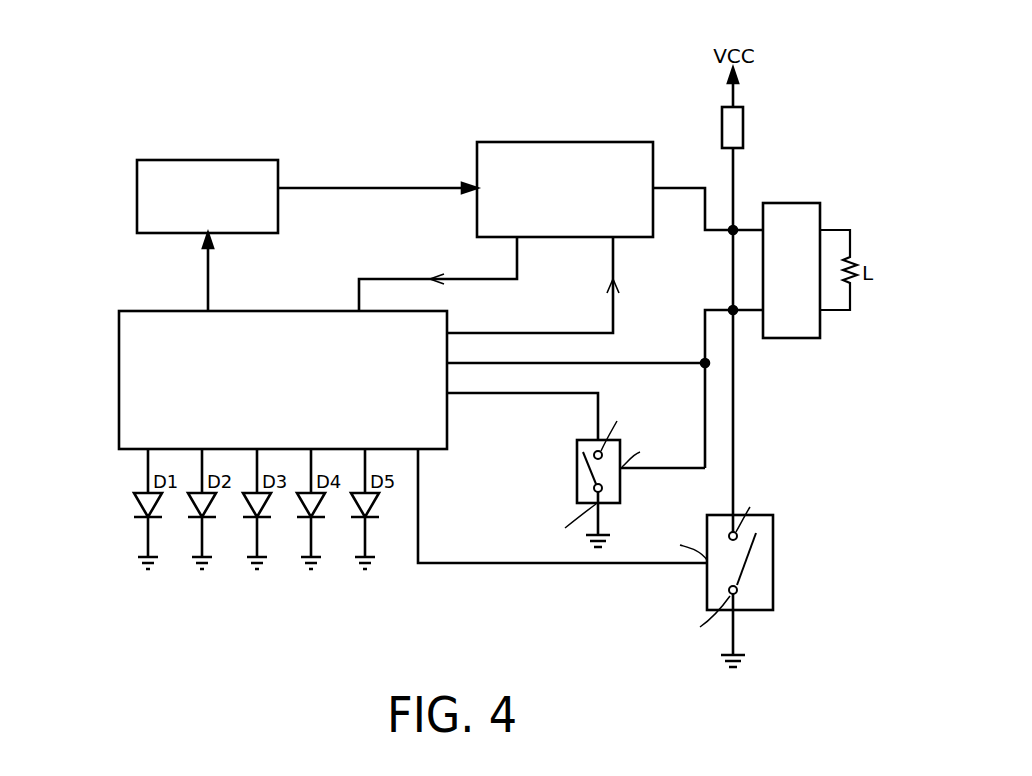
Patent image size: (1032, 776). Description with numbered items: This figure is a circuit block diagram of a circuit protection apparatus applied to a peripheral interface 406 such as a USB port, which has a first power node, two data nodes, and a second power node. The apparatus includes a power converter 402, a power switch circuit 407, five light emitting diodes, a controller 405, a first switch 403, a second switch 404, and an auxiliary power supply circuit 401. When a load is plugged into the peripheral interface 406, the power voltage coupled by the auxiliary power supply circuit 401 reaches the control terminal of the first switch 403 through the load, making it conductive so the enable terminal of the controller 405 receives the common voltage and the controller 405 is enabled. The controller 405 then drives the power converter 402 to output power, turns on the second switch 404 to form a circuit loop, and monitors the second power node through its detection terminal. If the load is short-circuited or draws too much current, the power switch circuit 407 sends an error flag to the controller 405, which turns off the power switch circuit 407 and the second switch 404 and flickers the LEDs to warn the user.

The auxiliary power supply circuit 401 is at (745, 128).
The power converter 402 is at (137, 191).
The first switch 403 is at (577, 470).
The second switch 404 is at (775, 563).
The controller 405 is at (119, 361).
The peripheral interface 406 is at (793, 203).
The power switch circuit 407 is at (577, 142).